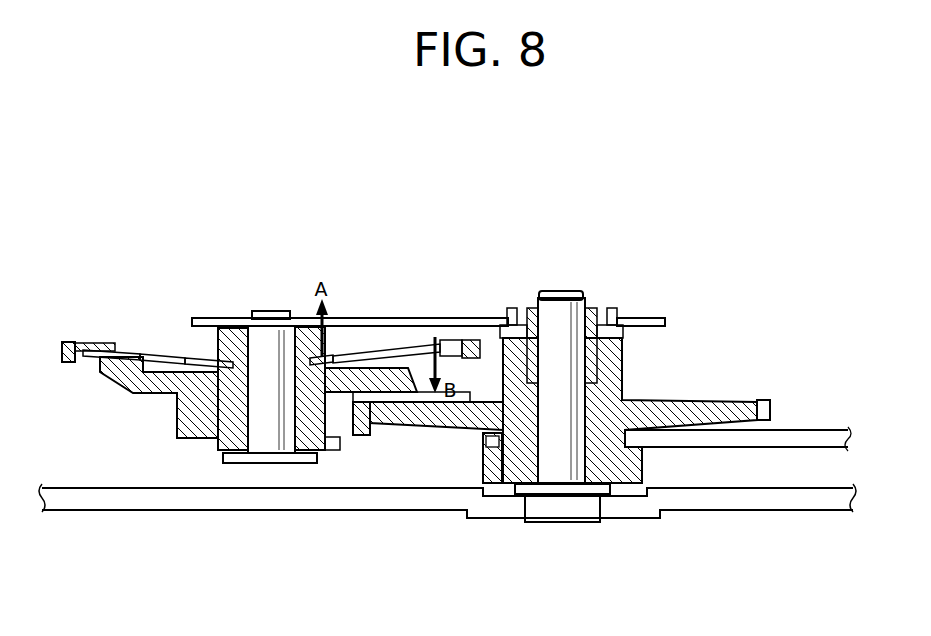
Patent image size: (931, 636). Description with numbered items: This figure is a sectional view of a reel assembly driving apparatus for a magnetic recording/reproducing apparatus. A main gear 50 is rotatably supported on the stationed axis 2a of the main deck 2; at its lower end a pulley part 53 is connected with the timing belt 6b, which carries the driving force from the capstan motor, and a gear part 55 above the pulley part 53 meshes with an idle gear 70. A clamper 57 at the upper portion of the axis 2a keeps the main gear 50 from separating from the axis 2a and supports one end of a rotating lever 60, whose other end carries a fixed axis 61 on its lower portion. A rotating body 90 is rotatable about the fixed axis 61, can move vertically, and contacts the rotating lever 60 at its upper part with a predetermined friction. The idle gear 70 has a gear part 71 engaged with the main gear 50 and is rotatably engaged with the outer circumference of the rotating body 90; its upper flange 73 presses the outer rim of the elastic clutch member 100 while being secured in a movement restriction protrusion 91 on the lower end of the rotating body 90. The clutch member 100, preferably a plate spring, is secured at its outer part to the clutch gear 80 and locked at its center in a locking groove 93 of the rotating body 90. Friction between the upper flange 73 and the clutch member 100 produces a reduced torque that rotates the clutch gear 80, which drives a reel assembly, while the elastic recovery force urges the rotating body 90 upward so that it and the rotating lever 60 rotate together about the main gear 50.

The main deck 2 is at (773, 497).
The stationed axis 2a is at (557, 475).
The timing belt 6b is at (833, 440).
The main gear 50 is at (674, 390).
The pulley part 53 is at (500, 486).
The gear part 55 is at (763, 403).
The clamper 57 is at (596, 318).
The rotating lever 60 is at (443, 318).
The fixed axis 61 is at (272, 343).
The idle gear 70 is at (155, 386).
The gear part 71 is at (360, 432).
The upper flange 73 is at (415, 348).
The clutch gear 80 is at (75, 342).
The rotating body 90 is at (313, 433).
The movement restriction protrusion 91 is at (206, 450).
The locking groove 93 is at (308, 344).
The elastic clutch member 100 is at (156, 346).